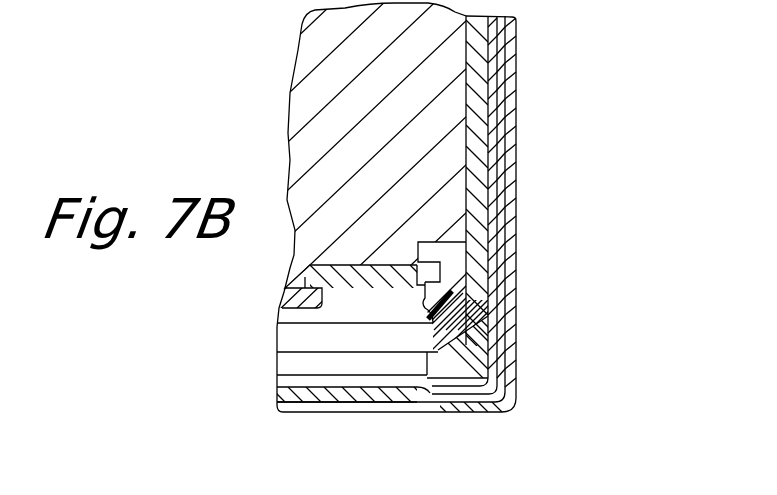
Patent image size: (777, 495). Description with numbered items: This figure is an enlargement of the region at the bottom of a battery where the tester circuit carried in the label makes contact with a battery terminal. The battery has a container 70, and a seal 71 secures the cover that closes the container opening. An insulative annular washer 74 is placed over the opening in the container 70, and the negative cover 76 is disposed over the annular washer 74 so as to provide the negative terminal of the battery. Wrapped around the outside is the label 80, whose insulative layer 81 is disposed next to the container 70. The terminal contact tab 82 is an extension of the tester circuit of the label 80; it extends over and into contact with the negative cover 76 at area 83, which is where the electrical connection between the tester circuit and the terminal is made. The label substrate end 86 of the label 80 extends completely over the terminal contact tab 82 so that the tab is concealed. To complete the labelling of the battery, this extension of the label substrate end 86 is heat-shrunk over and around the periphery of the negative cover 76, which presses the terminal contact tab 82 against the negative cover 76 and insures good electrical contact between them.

The container 70 is at (478, 66).
The label 80 is at (515, 80).
The terminal contact tab 82 is at (502, 118).
The insulative layer 81 is at (502, 157).
The seal 71 is at (448, 295).
The insulative annular washer 74 is at (510, 358).
The negative cover 76 is at (495, 385).
The area 83 is at (423, 403).
The label substrate end 86 is at (488, 413).